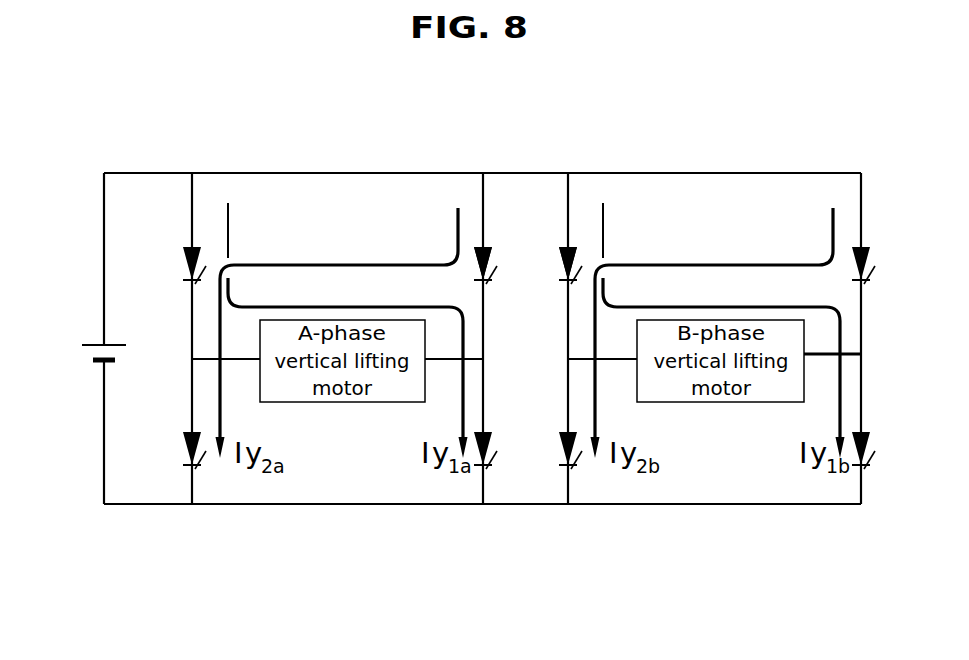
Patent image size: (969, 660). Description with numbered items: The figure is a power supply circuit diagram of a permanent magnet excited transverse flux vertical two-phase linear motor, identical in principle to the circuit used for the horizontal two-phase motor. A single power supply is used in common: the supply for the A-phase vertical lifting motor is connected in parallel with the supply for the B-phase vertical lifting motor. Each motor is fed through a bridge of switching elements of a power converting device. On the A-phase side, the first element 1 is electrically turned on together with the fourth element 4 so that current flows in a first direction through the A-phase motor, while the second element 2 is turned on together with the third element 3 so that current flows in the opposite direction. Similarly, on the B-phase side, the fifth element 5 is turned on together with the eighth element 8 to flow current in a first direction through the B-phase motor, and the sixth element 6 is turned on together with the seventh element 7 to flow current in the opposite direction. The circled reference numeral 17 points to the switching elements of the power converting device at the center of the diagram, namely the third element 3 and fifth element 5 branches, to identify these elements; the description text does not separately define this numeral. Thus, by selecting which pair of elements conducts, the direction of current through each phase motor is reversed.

The switching element 17 is at (488, 242).
The element S1 of power converting device 1 is at (182, 265).
The element S2 of power converting device 2 is at (182, 450).
The element S3 of power converting device 3 is at (498, 265).
The element S4 of power converting device 4 is at (498, 450).
The element S5 of power converting device 5 is at (558, 265).
The element S6 of power converting device 6 is at (558, 450).
The element S7 of power converting device 7 is at (877, 265).
The element S8 of power converting device 8 is at (877, 450).